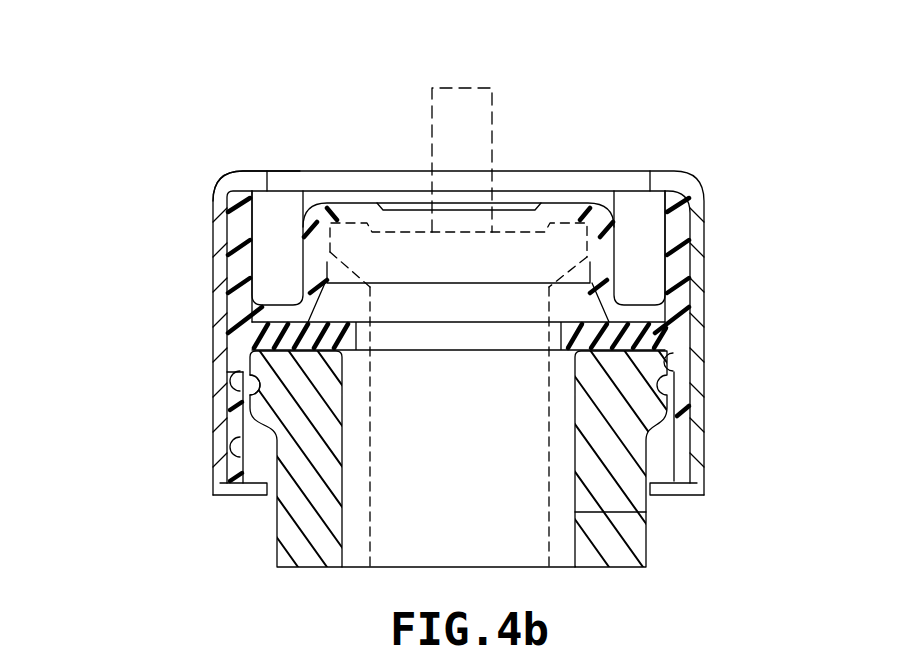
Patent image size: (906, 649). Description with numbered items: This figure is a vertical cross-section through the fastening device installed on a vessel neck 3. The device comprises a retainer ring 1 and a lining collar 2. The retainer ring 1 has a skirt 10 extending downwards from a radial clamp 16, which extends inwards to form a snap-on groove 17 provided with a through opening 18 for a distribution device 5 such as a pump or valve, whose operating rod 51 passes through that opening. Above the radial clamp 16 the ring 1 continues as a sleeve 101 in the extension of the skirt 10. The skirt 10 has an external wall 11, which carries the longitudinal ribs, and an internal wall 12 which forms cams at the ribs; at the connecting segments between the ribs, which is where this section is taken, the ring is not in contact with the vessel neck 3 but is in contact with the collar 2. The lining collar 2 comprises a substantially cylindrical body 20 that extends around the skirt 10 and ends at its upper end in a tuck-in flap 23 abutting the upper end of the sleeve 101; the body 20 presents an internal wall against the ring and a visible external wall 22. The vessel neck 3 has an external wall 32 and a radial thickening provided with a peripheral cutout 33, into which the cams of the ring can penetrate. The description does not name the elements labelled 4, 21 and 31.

The retainer ring 1 is at (632, 268).
The lining collar 2 is at (203, 273).
The vessel neck 3 is at (657, 542).
The sealing band 4 is at (250, 333).
The distribution device 5 is at (425, 432).
The skirt 10 is at (232, 407).
The external wall 11 is at (232, 478).
The internal wall 12 is at (672, 386).
The radial clamp 16 is at (603, 320).
The snap-on groove 17 is at (610, 232).
The through opening 18 is at (500, 220).
The substantially cylindrical body 20 is at (222, 212).
The upper sealing lobe 21 is at (252, 385).
The visible external wall 22 is at (243, 357).
The tuck-in flap 23 is at (243, 185).
The neck shoulder 31 is at (650, 512).
The external wall of the vessel neck 32 is at (238, 420).
The peripheral cutout 33 is at (683, 412).
The operating rod 51 is at (468, 137).
The sleeve 101 is at (217, 247).